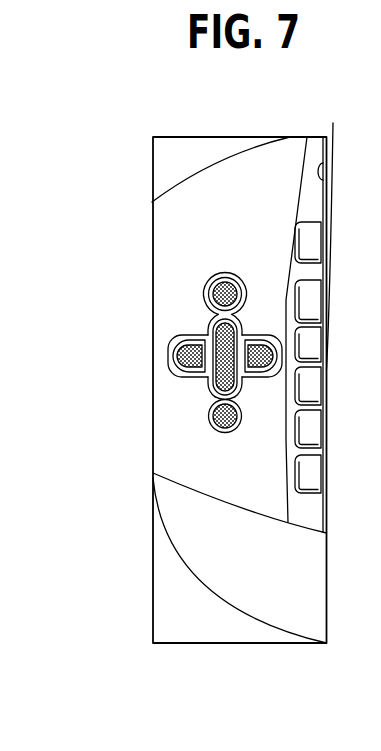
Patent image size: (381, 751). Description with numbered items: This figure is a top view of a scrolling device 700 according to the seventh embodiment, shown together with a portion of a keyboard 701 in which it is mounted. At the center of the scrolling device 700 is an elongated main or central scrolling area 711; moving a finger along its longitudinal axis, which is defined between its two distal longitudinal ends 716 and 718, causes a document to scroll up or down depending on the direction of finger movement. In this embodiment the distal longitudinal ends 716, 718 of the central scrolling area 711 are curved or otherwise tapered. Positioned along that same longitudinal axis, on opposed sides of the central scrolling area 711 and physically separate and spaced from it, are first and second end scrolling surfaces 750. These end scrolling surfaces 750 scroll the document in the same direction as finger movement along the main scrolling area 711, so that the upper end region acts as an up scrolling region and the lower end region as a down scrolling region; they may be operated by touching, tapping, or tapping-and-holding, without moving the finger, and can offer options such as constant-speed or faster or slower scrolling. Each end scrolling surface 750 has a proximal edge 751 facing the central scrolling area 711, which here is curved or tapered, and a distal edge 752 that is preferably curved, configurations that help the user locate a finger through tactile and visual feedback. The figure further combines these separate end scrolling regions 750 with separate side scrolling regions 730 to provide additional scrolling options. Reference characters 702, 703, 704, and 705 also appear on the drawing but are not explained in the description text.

The scrolling device 700 is at (187, 275).
The keyboard 701 is at (244, 168).
The side edge 702 is at (327, 233).
The key recess 703 is at (207, 327).
The keypad area 704 is at (207, 234).
The center key ring 705 is at (243, 322).
The main scrolling area 711 is at (209, 376).
The distal longitudinal end 716 is at (199, 336).
The distal longitudinal end 718 is at (207, 402).
The side scrolling region 730 is at (168, 355).
The end scrolling surface 750 is at (227, 278).
The proximal edge 751 is at (232, 286).
The distal edge 752 is at (224, 273).